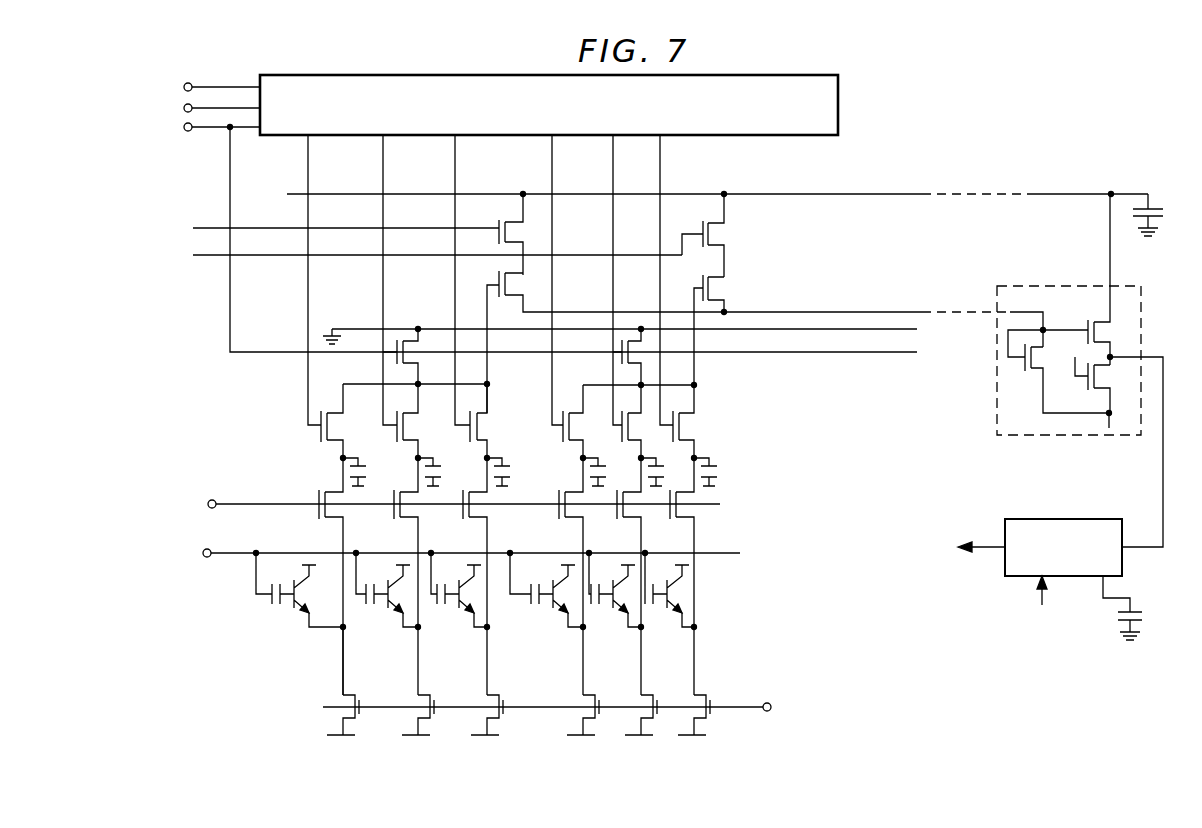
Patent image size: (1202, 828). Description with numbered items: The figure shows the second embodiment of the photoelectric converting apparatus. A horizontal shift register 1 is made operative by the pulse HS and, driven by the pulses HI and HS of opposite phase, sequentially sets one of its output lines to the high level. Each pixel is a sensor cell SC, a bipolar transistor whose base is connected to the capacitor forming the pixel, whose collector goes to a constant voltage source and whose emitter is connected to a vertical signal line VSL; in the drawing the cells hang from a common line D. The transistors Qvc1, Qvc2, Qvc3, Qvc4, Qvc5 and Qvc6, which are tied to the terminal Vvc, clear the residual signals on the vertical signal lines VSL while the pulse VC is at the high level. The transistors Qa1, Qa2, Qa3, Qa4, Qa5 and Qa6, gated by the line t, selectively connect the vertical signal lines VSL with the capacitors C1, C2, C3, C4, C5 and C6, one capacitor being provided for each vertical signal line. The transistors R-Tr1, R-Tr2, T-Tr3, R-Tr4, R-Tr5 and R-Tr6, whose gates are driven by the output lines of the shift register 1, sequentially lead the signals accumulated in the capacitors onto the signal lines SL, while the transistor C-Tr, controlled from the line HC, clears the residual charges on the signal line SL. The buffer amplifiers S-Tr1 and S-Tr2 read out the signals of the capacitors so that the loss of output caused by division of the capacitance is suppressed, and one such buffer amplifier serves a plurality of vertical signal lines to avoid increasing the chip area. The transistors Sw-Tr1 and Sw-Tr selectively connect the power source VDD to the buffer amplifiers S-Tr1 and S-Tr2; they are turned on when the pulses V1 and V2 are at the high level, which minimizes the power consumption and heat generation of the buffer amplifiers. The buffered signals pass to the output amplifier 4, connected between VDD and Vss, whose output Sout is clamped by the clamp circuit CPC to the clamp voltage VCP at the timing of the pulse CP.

The horizontal shift register 1 is at (840, 92).
The output amplifier 4 is at (997, 408).
The pulse φ HS is at (197, 87).
The pulse φ HI is at (197, 108).
The horizontal clamp pulse HC is at (525, 235).
The pulse φ V1 is at (324, 228).
The pulse φ V2 is at (416, 255).
The transistor SW-Tr1 Sw-Tr1 is at (509, 214).
The transistor SW-Tr Sw-Tr is at (712, 233).
The buffer amplifier S-Tr1 is at (527, 289).
The buffer amplifier S-Tr2 is at (712, 288).
The transistor C-Tr is at (410, 337).
The signal line SL is at (362, 383).
The transistor R-Tr1 is at (316, 410).
The transistor R-Tr2 is at (410, 424).
The transistor T-Tr3 is at (484, 428).
The transistor R-Tr4 is at (566, 408).
The transistor R-Tr5 is at (640, 428).
The transistor R-Tr6 is at (690, 428).
The capacitor C1 is at (364, 473).
The capacitor C2 is at (439, 473).
The capacitor C3 is at (508, 473).
The capacitor C4 is at (604, 473).
The capacitor C5 is at (662, 473).
The capacitor C6 is at (715, 473).
The transfer pulse t is at (448, 504).
The transistor Qa1 is at (323, 576).
The transistor Qa2 is at (398, 576).
The transistor Qa3 is at (467, 576).
The transistor Qa4 is at (563, 576).
The transistor Qa5 is at (621, 576).
The transistor Qa6 is at (674, 576).
The drive pulse D is at (456, 553).
The bipolar transistor sensor cell SC is at (300, 613).
The vertical signal line VSL is at (343, 668).
The pulse φ VC is at (565, 710).
The transistor QVC1 Qvc1 is at (340, 708).
The transistor QVC2 Qvc2 is at (420, 740).
The transistor QVC3 Qvc3 is at (487, 740).
The transistor QVC4 Qvc4 is at (598, 740).
The transistor QVC5 Qvc5 is at (652, 698).
The transistor QVC6 Qvc6 is at (710, 725).
The clamp voltage Vvc is at (350, 740).
The ground potential Vss is at (1106, 449).
The output signal Sout is at (1161, 355).
The power source VDD is at (1162, 215).
The clamp circuit CPC is at (1068, 519).
The pulse φ CP is at (1039, 604).
The clamp voltage VCP is at (1137, 608).